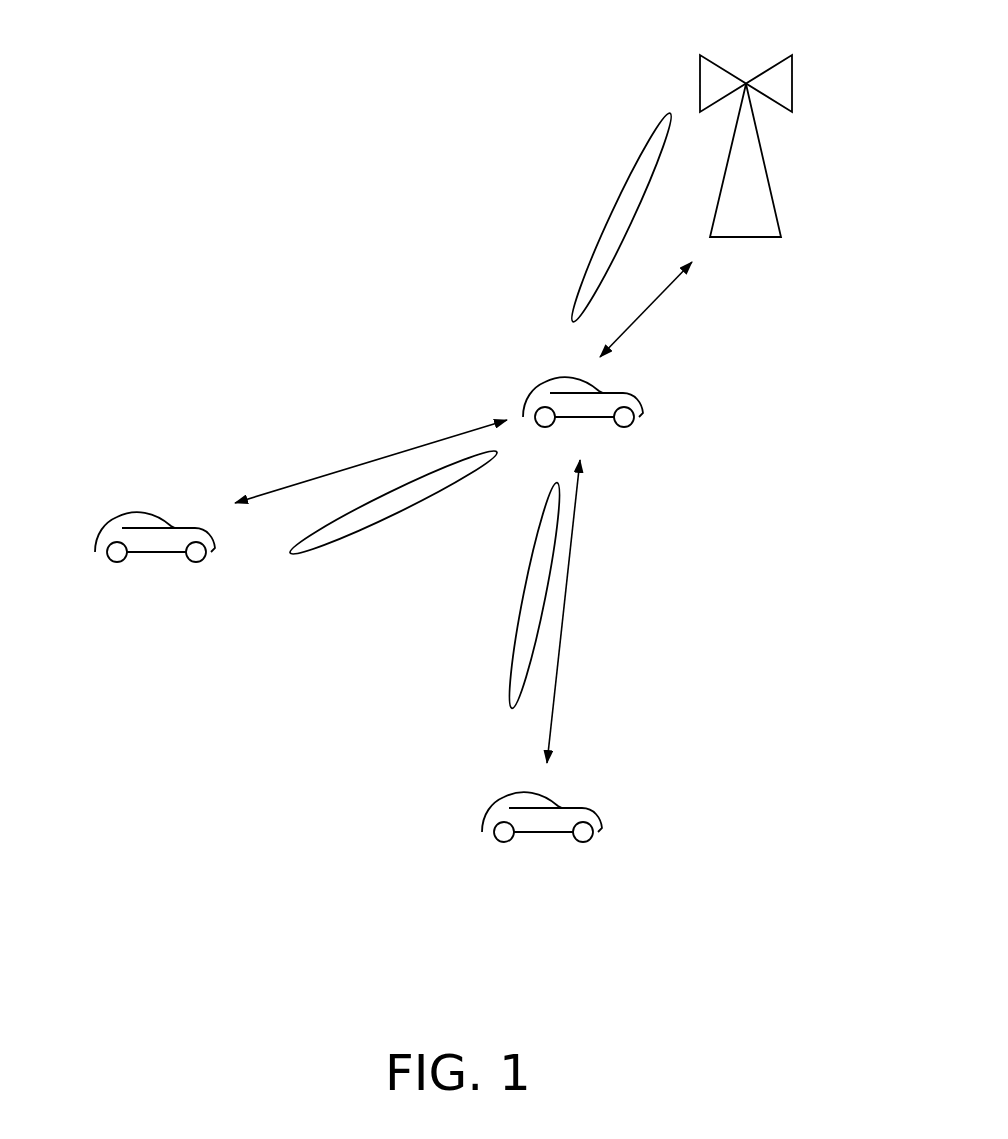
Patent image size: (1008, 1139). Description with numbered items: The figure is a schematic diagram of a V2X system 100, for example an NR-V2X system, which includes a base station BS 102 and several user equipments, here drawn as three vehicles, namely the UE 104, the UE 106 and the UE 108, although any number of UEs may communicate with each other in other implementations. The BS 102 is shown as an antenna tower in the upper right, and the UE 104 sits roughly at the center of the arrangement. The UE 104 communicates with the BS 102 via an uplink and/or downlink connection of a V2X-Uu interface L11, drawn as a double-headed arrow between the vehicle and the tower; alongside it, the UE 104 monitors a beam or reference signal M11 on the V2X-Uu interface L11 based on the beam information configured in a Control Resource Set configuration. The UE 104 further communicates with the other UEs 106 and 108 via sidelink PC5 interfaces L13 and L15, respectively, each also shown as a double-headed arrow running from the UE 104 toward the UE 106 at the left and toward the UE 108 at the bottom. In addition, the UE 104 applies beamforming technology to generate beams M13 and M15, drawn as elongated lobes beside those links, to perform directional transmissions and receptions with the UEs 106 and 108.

The V2X system 100 is at (402, 50).
The BS 102 is at (768, 172).
The UE 104 is at (632, 395).
The UE 106 is at (135, 512).
The UE 108 is at (582, 812).
The beam M11 is at (616, 218).
The V2X-Uu interface L11 is at (657, 309).
The beam M13 is at (393, 502).
The SL PC5 interface L13 is at (371, 461).
The beam M15 is at (516, 596).
The SL PC5 interface L15 is at (582, 611).